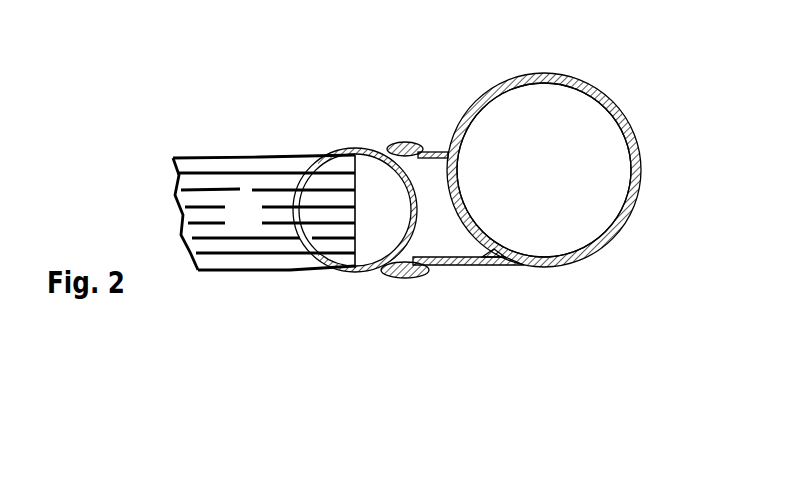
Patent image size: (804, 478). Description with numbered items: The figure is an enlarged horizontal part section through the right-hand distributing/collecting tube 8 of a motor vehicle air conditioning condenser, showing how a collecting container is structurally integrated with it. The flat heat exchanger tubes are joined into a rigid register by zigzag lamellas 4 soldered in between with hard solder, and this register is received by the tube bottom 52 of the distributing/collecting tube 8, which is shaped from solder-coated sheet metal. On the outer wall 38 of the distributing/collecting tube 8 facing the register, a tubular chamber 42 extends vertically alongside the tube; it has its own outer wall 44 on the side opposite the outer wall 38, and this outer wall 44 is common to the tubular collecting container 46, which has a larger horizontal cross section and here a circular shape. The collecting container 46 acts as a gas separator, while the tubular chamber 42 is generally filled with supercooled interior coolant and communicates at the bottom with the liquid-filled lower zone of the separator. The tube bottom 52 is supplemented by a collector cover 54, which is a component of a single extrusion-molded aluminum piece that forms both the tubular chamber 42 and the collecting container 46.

The zigzag lamellas 4 is at (252, 228).
The distributing/collecting tube 8 is at (395, 222).
The outer wall 38 is at (406, 160).
The collector cover 54 is at (433, 155).
The tubular chamber 42 is at (462, 252).
The outer wall 44 is at (457, 173).
The tubular collecting container 46 is at (600, 225).
The tube bottom 52 is at (363, 268).